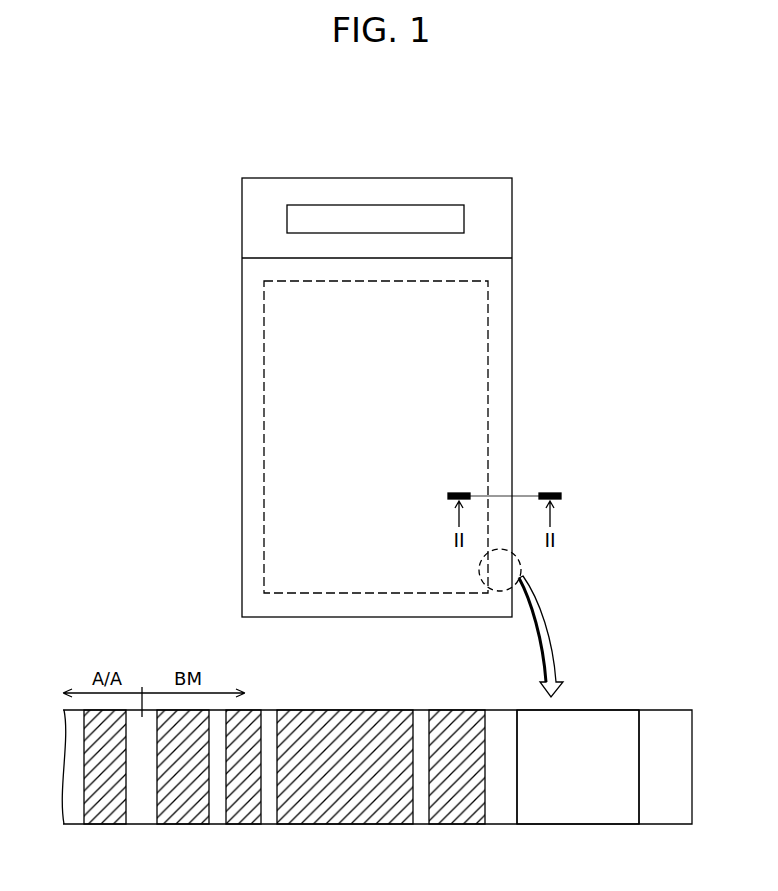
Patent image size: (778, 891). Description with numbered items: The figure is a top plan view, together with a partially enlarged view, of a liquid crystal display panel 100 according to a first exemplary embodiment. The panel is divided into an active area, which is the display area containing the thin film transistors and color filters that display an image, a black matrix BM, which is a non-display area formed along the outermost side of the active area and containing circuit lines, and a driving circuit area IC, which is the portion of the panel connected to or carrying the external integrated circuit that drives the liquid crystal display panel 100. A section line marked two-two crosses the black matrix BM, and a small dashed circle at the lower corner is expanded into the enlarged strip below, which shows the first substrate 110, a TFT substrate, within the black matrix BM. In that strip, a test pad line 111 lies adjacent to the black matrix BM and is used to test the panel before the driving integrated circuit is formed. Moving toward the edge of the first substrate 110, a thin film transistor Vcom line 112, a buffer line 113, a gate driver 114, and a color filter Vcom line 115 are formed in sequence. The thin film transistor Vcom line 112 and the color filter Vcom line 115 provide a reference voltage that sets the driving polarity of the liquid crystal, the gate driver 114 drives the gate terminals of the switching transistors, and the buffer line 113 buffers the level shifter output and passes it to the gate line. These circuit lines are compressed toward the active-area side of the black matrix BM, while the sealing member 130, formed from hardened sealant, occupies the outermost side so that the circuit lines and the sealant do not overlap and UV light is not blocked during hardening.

The liquid crystal display panel 100 is at (393, 119).
The driving circuit area IC is at (495, 216).
The black matrix BM is at (500, 427).
The first substrate 110 is at (659, 689).
The test pad line 111 is at (105, 815).
The thin film transistor common voltage (Vcom) line 112 is at (185, 815).
The buffer line 113 is at (245, 815).
The gate driver 114 is at (348, 815).
The color filter common voltage (Vcom) line 115 is at (458, 815).
The sealing member 130 is at (580, 815).